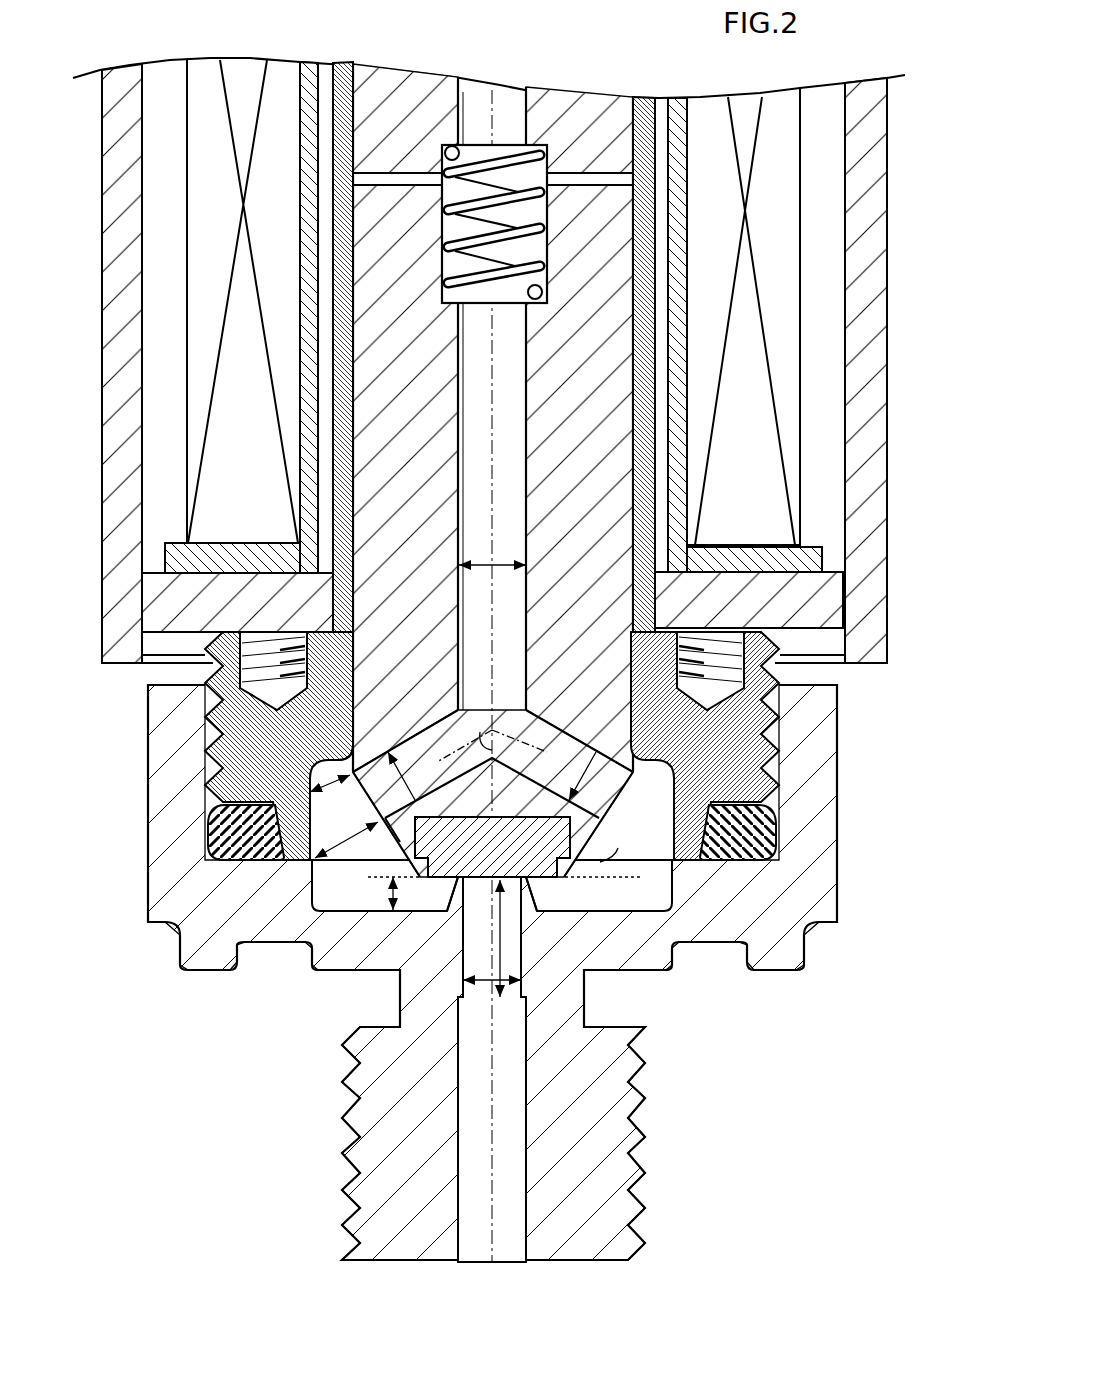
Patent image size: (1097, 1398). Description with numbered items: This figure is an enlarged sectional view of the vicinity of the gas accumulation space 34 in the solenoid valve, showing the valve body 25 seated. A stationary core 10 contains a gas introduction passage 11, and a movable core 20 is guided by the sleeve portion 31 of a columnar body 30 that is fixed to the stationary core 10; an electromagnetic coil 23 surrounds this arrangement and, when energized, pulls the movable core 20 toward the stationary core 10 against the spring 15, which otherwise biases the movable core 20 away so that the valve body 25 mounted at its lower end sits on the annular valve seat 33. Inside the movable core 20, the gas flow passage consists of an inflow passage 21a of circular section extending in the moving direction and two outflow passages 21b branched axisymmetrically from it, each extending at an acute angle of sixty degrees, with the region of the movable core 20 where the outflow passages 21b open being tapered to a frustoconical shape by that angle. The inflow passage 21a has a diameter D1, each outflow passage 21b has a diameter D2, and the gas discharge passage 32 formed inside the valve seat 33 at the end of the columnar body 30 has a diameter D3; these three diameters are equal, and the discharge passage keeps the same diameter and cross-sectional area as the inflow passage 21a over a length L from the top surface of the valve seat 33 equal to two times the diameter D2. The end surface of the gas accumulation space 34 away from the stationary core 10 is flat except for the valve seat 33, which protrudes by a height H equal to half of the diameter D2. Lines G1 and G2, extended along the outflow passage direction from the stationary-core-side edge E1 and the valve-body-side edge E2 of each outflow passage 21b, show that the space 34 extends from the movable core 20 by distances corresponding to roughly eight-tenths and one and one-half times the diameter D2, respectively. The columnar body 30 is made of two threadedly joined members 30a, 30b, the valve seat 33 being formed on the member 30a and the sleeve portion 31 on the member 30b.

The stationary core 10 is at (590, 123).
The gas introduction passage 11 is at (513, 115).
The spring 15 is at (478, 167).
The movable core 20 is at (392, 200).
The inflow passage 21a is at (500, 462).
The outflow passages 21b is at (437, 745).
The electromagnetic coil 23 is at (767, 180).
The valve body 25 is at (530, 880).
The columnar body 30 is at (555, 947).
The member 30a is at (790, 885).
The member 30b is at (730, 763).
The sleeve portion 31 is at (347, 407).
The gas discharge passage 32 is at (478, 948).
The valve seat 33 is at (458, 880).
The gas accumulation space 34 is at (668, 814).
The diameter of the inflow passage D1 is at (492, 546).
The diameter of the outflow passage D2 is at (492, 774).
The diameter of the gas discharge passage D3 is at (487, 987).
The line extended from the stationary-core-side edge G1 is at (336, 795).
The line extended from the valve-body-side edge G2 is at (346, 835).
The protrusion height H is at (380, 897).
The length L is at (490, 938).
The stationary-core-side edge E1 is at (337, 763).
The valve-body-side edge E2 is at (377, 822).